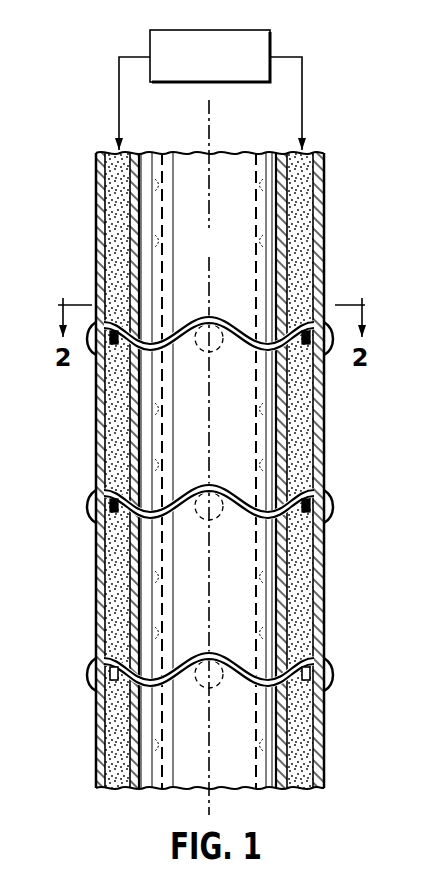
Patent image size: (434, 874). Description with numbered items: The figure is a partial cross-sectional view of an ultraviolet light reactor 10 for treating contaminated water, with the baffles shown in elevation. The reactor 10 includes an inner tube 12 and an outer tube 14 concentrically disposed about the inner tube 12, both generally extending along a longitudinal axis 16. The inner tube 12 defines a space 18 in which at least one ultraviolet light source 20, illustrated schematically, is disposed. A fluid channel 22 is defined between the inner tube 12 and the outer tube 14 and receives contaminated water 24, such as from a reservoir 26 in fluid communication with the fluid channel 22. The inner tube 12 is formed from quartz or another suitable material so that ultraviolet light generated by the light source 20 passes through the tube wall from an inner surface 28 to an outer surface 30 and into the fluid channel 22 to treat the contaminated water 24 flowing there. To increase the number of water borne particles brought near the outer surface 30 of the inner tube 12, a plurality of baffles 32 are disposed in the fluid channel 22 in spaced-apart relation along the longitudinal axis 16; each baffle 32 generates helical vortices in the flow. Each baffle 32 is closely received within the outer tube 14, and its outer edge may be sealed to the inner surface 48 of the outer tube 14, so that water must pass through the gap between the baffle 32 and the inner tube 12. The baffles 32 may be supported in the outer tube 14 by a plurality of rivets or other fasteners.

The ultraviolet light reactor 10 is at (372, 60).
The inner tube 12 is at (290, 203).
The outer tube 14 is at (93, 241).
The longitudinal axis 16 is at (209, 107).
The space 18 is at (189, 470).
The ultraviolet light source 20 is at (258, 450).
The fluid channel 22 is at (306, 253).
The contaminated water 24 is at (112, 575).
The reservoir 26 is at (205, 30).
The inner surface 28 is at (270, 560).
The outer surface 30 is at (288, 605).
The baffle 32 is at (117, 318).
The inner surface 48 is at (111, 735).